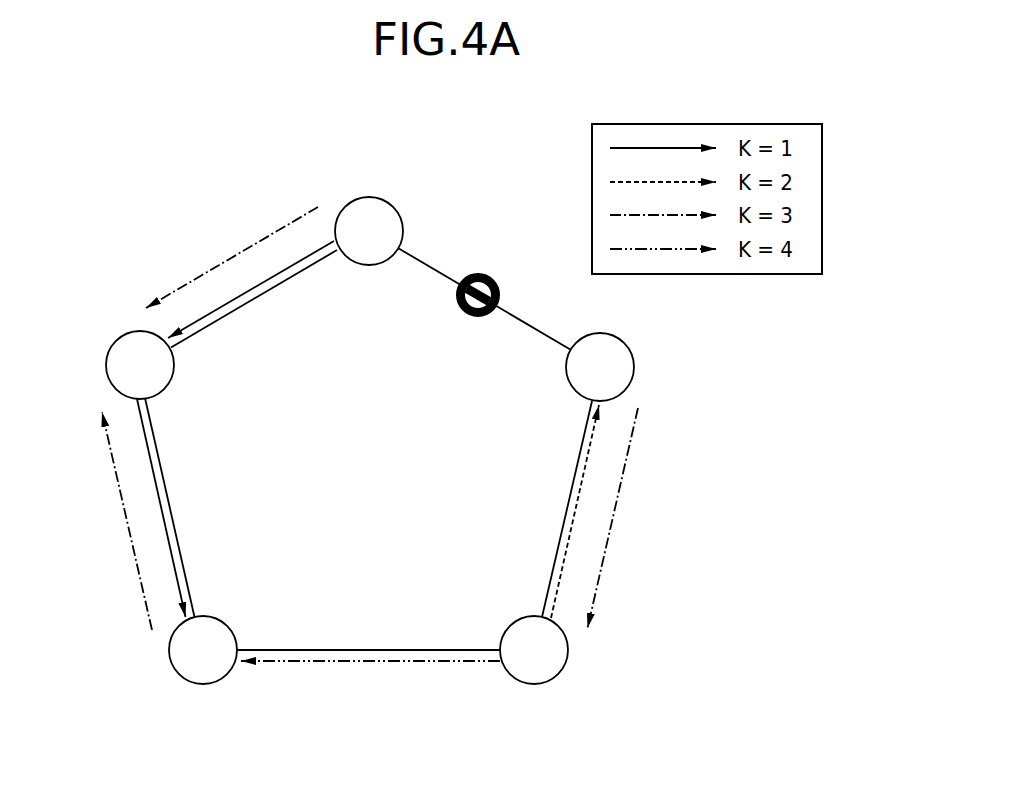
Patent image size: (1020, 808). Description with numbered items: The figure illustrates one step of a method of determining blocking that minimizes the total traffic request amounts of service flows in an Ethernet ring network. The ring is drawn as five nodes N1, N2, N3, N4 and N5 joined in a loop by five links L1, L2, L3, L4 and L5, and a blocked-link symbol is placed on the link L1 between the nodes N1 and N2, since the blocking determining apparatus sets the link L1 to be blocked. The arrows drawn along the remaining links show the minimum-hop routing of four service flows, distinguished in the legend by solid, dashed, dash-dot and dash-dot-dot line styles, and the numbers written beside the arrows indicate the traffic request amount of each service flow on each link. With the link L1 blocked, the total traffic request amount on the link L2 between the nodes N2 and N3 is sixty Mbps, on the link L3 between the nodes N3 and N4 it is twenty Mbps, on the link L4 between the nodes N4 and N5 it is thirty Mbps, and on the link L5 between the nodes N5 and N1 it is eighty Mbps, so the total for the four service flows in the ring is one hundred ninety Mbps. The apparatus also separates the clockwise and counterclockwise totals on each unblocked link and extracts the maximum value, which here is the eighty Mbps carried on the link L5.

The node N1 is at (383, 243).
The node N2 is at (614, 379).
The node N3 is at (548, 662).
The node N4 is at (217, 662).
The node N5 is at (154, 377).
The link L1 is at (520, 322).
The link L2 is at (572, 498).
The link L3 is at (367, 648).
The link L4 is at (170, 497).
The link L5 is at (257, 297).